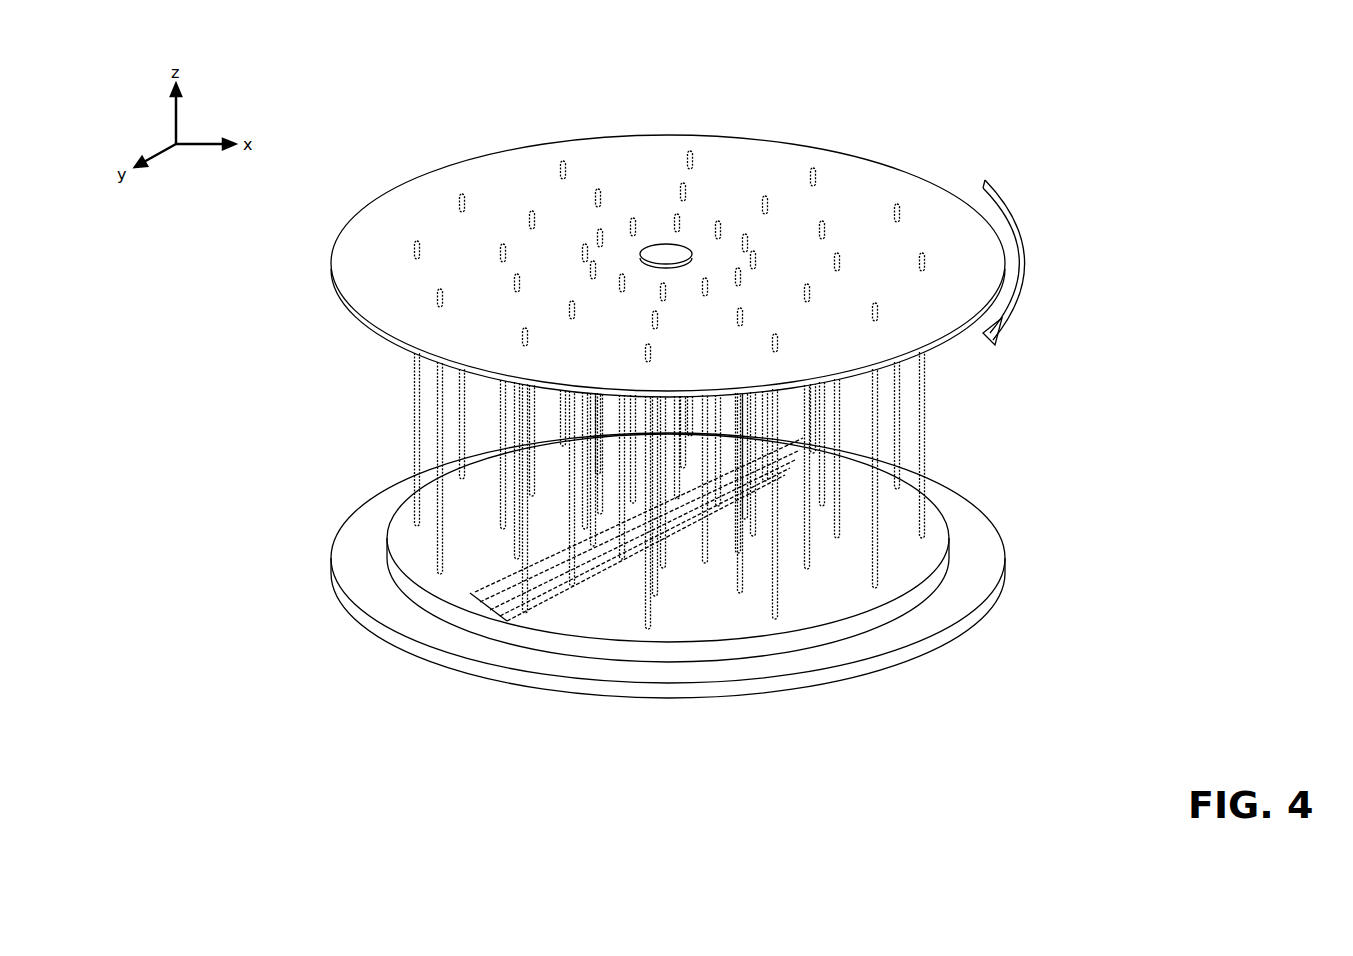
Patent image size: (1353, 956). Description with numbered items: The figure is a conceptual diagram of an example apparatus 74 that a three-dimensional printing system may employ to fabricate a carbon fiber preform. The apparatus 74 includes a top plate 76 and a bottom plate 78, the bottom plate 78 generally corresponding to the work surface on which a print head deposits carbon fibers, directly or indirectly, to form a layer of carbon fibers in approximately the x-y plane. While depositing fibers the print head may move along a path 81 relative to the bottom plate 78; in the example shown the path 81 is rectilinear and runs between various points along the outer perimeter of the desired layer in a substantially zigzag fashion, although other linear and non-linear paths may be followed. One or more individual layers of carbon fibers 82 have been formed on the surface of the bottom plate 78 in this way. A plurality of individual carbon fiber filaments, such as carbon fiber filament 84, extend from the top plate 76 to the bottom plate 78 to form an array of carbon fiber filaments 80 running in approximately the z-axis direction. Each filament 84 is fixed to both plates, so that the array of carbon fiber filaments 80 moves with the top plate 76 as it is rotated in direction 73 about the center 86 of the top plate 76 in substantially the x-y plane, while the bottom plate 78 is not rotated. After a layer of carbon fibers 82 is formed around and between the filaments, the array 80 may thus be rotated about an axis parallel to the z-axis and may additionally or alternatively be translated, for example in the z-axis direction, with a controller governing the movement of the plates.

The direction 73 is at (1030, 258).
The apparatus 74 is at (1112, 88).
The top plate 76 is at (378, 224).
The bottom plate 78 is at (998, 542).
The array of carbon fiber filaments 80 is at (948, 428).
The path 81 is at (452, 596).
The layer of carbon fibers 82 is at (387, 550).
The carbon fiber filament 84 is at (412, 428).
The center 86 is at (668, 250).